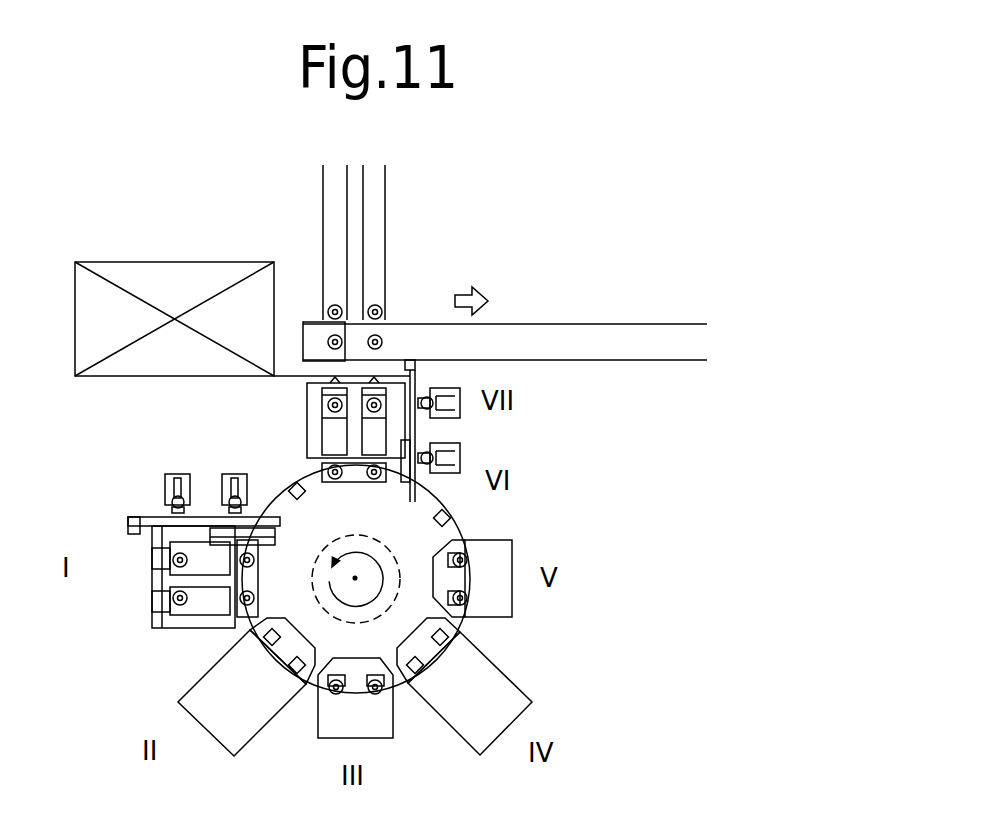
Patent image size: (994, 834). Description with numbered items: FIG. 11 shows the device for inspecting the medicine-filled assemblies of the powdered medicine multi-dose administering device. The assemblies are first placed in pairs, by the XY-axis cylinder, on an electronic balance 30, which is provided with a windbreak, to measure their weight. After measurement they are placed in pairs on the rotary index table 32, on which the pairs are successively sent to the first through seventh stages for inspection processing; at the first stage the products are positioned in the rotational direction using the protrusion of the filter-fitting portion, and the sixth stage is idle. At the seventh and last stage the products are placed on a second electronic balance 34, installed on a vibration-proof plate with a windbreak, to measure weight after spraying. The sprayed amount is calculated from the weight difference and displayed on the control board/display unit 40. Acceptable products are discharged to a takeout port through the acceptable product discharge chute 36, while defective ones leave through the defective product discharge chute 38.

The electronic balance 30 is at (138, 606).
The rotary index table 32 is at (472, 512).
The electronic balance 34 is at (292, 414).
The acceptable product discharge chute 36 is at (626, 352).
The defective product discharge chute 38 is at (386, 202).
The control board/display unit 40 is at (185, 250).